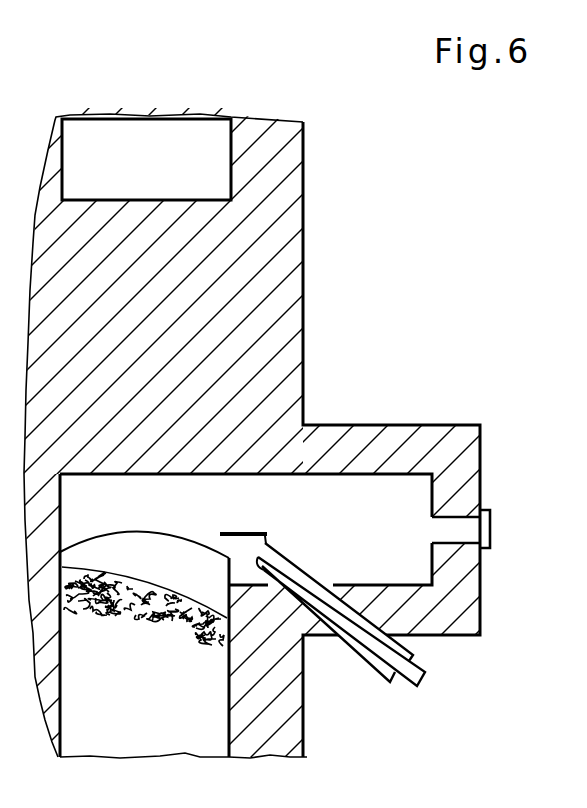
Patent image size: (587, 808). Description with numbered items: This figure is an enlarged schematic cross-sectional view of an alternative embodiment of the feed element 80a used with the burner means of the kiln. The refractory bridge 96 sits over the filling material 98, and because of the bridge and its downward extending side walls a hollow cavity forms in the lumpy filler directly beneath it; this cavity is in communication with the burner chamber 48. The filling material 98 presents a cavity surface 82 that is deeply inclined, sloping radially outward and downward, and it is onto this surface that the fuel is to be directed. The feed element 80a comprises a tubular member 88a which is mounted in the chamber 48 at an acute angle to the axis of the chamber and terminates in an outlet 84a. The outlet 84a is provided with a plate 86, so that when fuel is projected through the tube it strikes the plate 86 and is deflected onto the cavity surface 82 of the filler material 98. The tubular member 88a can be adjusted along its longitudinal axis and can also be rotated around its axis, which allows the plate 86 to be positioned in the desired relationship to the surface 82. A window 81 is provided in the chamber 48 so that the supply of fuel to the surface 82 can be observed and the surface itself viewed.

The refractory bridge 96 is at (167, 307).
The filling material 98 is at (158, 688).
The cavity surface 82 is at (127, 572).
The burner chamber 48 is at (413, 497).
The window 81 is at (492, 530).
The plate 86 is at (248, 530).
The tubular member 88a is at (418, 665).
The outlet 84a is at (270, 562).
The feed element 80a is at (345, 665).